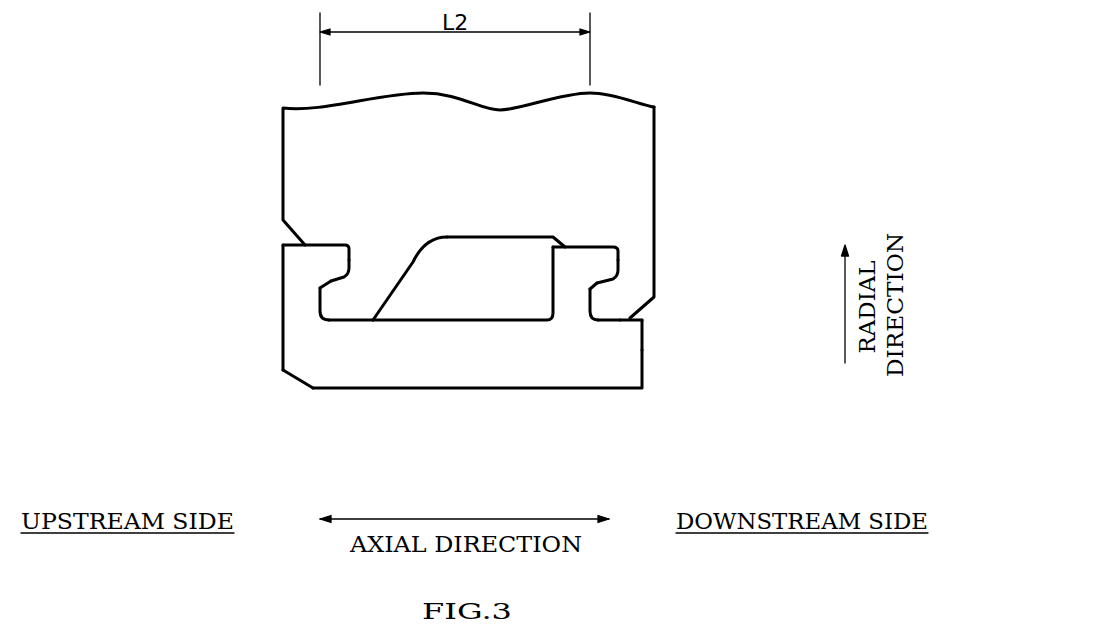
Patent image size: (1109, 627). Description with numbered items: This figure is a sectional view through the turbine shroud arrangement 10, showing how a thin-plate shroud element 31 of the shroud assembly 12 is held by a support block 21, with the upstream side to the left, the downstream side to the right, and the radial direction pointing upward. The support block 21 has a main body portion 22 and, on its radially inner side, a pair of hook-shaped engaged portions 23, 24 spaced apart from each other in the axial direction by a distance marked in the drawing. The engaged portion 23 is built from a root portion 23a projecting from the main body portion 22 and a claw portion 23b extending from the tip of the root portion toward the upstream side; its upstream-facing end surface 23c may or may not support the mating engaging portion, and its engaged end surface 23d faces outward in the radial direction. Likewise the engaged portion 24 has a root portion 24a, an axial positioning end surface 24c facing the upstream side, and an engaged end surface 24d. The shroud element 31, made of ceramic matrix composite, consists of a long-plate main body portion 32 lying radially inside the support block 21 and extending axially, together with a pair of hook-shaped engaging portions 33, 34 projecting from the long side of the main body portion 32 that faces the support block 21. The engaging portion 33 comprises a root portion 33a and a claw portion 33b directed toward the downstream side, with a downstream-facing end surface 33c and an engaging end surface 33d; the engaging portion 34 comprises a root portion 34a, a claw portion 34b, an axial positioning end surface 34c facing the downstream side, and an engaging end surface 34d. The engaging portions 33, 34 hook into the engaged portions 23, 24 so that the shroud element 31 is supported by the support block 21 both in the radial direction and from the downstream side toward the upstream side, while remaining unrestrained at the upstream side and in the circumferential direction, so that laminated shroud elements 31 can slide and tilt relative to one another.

The housing 10 is at (240, 98).
The shroud assembly 12 is at (262, 338).
The support block 21 is at (653, 103).
The main body portion 22 is at (628, 148).
The engaged portion 23 is at (465, 443).
The root portion 23a is at (387, 267).
The claw portion 23b is at (350, 303).
The end surface 23c is at (338, 304).
The engaged end surface 23d is at (333, 281).
The engaged portion 24 is at (755, 243).
The root portion 24a is at (637, 273).
The axial positioning end surface 24c is at (592, 300).
The engaged end surface 24d is at (613, 268).
The shroud element 31 is at (650, 337).
The main body portion 32 is at (470, 343).
The engaging portion 33 is at (170, 247).
The root portion 33a is at (302, 301).
The claw portion 33b is at (317, 263).
The end surface 33c is at (318, 312).
The engaging end surface 33d is at (331, 279).
The engaging portion 34 is at (600, 443).
The root portion 34a is at (572, 300).
The claw portion 34b is at (568, 262).
The axial positioning end surface 34c is at (590, 303).
The engaging end surface 34d is at (598, 281).